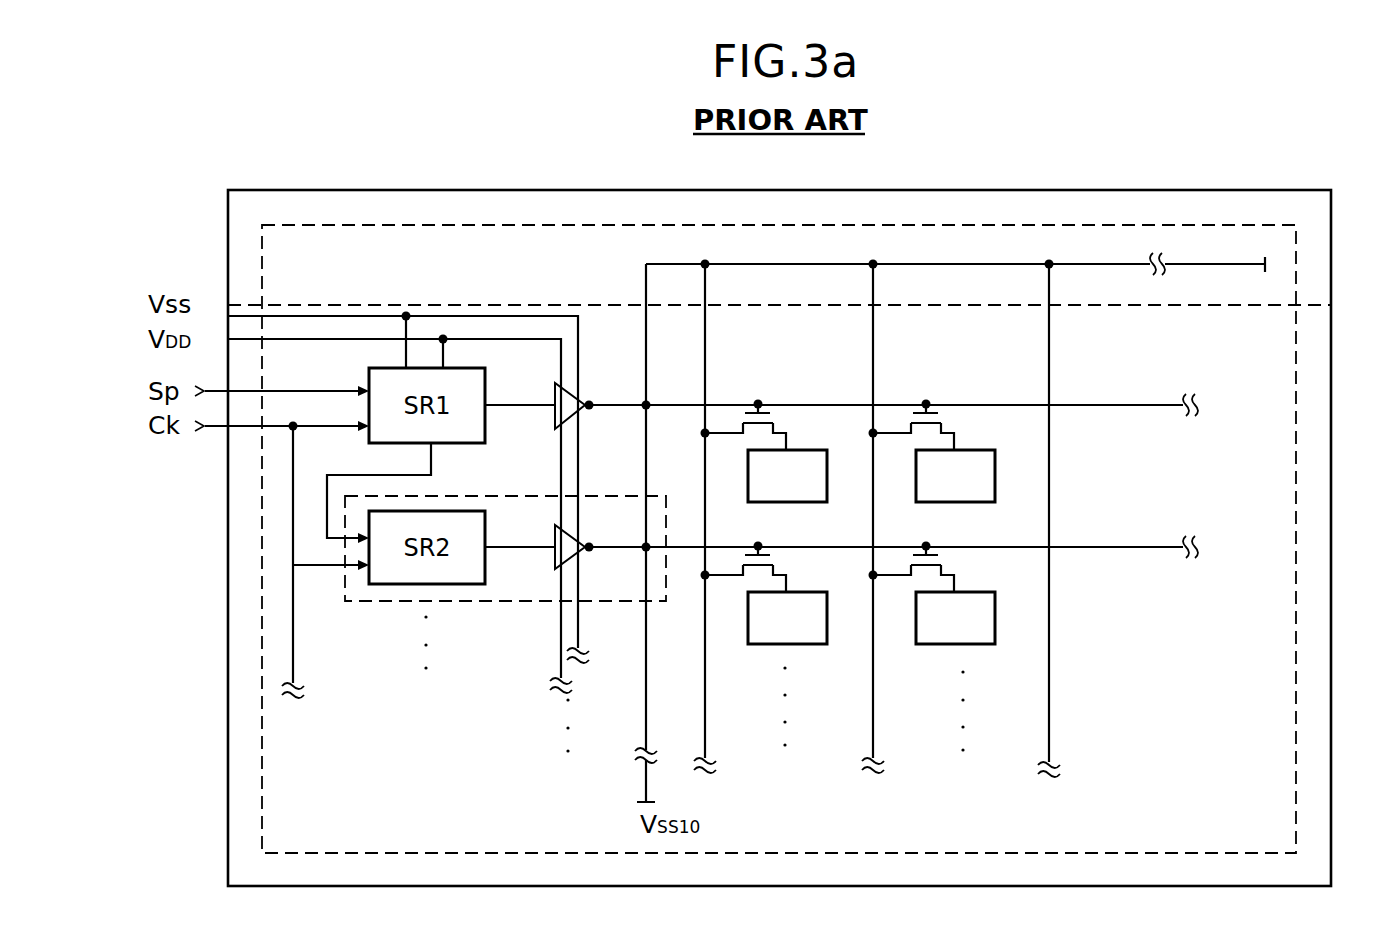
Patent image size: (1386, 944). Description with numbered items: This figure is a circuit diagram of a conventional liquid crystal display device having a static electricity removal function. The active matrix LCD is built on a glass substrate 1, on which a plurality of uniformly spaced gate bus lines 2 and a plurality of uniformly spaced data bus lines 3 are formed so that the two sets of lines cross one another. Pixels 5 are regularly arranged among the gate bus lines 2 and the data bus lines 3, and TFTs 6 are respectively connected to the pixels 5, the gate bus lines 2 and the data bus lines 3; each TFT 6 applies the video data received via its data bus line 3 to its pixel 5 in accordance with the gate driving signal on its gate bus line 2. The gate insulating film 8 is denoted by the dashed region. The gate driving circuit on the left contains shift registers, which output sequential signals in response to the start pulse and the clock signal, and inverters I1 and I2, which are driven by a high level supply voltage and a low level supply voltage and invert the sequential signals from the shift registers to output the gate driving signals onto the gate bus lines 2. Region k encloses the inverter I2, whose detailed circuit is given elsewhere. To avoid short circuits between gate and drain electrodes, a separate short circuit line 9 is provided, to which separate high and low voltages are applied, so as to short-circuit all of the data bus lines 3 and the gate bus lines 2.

The glass substrate 1 is at (1254, 206).
The gate bus lines 2 is at (1116, 402).
The data bus lines 3 is at (875, 680).
The pixels 5 is at (806, 483).
The TFTs 6 is at (948, 418).
The gate insulating film 8 is at (1272, 824).
The short circuit line 9 is at (935, 265).
The inverter I1 is at (572, 403).
The inverter I2 is at (572, 548).
The region K k is at (513, 600).